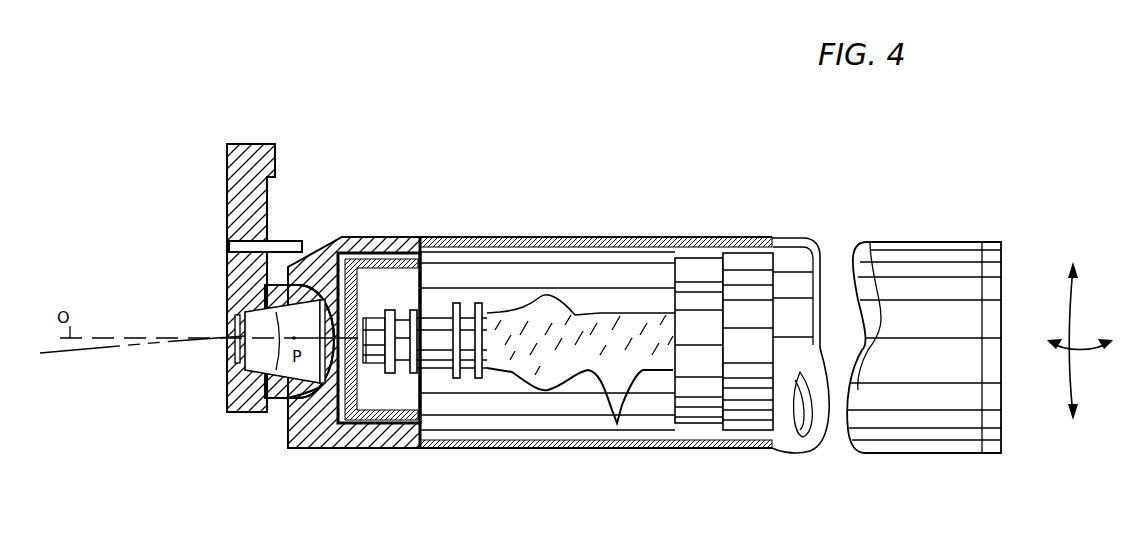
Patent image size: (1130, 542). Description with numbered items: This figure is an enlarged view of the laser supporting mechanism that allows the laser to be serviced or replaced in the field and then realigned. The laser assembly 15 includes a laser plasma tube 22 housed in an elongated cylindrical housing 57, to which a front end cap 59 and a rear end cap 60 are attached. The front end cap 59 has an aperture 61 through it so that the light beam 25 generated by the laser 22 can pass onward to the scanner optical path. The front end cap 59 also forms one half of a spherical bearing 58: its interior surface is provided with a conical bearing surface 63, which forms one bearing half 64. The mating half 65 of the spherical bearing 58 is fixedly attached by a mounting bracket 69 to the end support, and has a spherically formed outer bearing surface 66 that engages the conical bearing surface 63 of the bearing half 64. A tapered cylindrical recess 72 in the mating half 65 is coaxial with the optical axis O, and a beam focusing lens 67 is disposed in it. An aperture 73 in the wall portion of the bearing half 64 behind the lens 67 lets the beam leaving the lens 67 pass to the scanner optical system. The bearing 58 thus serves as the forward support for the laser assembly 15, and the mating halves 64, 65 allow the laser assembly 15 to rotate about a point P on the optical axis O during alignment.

The laser assembly 15 is at (716, 224).
The laser plasma tube 22 is at (600, 313).
The light beam 25 is at (74, 360).
The elongated cylindrical housing 57 is at (572, 238).
The spherical bearing 58 is at (242, 454).
The front end cap 59 is at (328, 247).
The rear end cap 60 is at (1000, 220).
The aperture 61 is at (358, 312).
The conical bearing surface 63 is at (305, 449).
The bearing half 64 is at (338, 431).
The mating bearing half 65 is at (280, 284).
The spherically formed outer bearing surface 66 is at (277, 400).
The beam focusing lens 67 is at (257, 350).
The mounting bracket 69 is at (235, 272).
The tapered cylindrical recess 72 is at (313, 292).
The aperture 73 is at (243, 330).